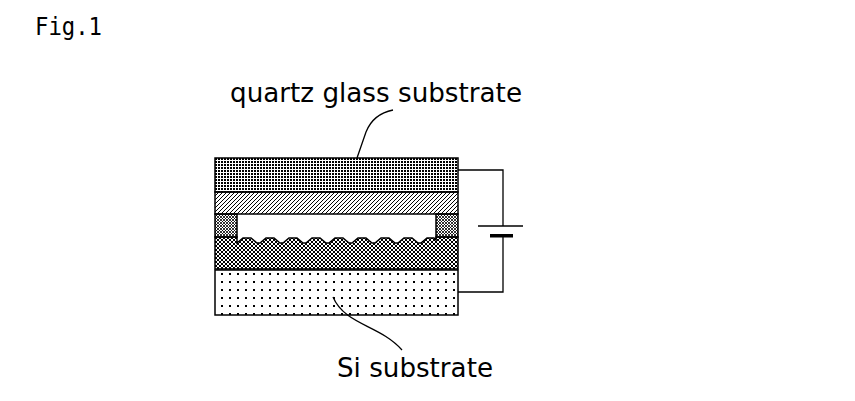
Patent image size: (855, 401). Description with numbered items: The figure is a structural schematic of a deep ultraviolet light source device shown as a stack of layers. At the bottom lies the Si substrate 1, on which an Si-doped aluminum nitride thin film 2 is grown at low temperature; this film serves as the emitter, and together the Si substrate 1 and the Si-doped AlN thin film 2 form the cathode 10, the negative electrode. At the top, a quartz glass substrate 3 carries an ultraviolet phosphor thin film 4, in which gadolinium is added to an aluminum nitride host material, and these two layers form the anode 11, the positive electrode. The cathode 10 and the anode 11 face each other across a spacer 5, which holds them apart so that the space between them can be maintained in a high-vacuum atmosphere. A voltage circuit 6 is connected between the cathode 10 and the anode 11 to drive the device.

The Si substrate 1 is at (212, 295).
The Si-doped aluminum nitride thin film 2 is at (212, 260).
The quartz glass substrate 3 is at (212, 172).
The ultraviolet phosphor thin film 4 is at (212, 205).
The spacer 5 is at (212, 226).
The voltage circuit 6 is at (530, 234).
The cathode 10 is at (125, 247).
The anode 11 is at (125, 130).